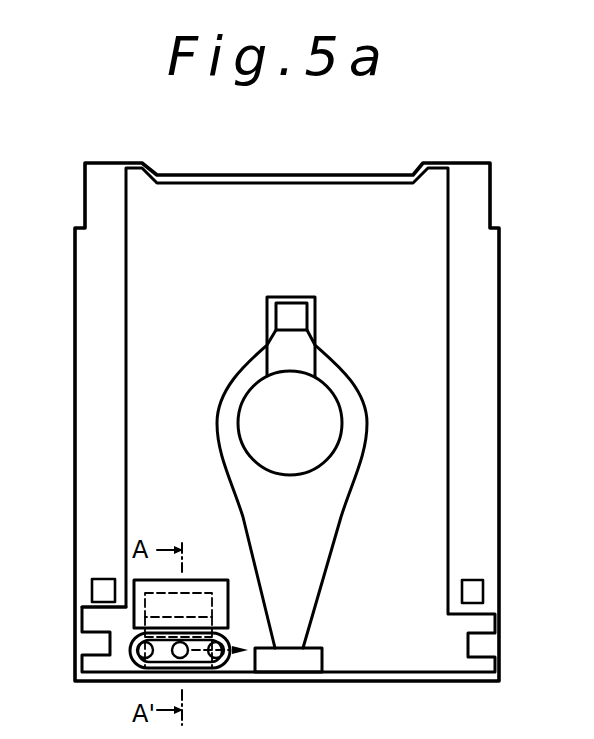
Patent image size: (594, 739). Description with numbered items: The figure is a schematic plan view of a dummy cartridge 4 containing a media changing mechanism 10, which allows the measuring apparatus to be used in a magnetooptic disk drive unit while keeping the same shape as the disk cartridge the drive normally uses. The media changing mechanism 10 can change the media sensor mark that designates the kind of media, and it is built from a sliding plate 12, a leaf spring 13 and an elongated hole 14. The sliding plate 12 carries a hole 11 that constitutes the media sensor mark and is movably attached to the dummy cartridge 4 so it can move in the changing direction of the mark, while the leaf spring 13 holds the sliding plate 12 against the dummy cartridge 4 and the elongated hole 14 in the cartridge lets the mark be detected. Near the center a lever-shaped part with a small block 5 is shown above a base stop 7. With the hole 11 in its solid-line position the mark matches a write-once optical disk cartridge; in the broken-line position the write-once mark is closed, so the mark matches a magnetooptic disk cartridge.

The dummy cartridge 4 is at (499, 302).
The pivot block 5 is at (308, 312).
The base stop 7 is at (322, 652).
The media changing mechanism 10 is at (204, 556).
The hole 11 is at (184, 654).
The sliding plate 12 is at (220, 630).
The leaf spring 13 is at (134, 607).
The elongated hole 14 is at (132, 650).